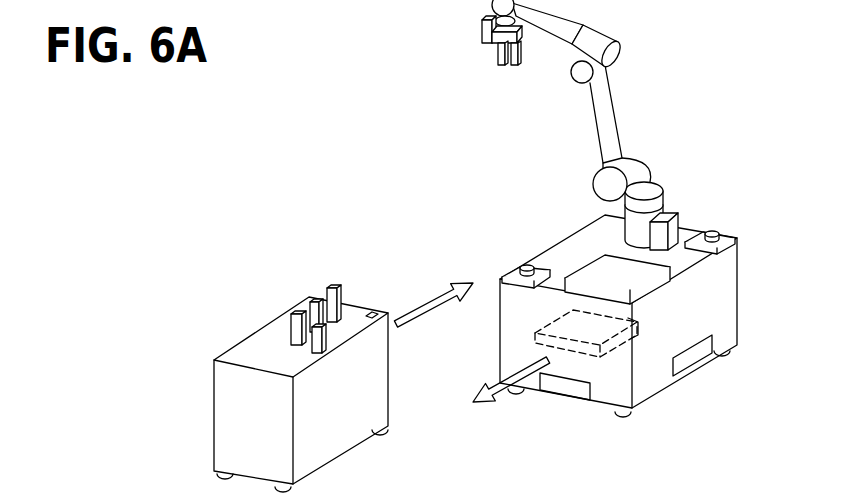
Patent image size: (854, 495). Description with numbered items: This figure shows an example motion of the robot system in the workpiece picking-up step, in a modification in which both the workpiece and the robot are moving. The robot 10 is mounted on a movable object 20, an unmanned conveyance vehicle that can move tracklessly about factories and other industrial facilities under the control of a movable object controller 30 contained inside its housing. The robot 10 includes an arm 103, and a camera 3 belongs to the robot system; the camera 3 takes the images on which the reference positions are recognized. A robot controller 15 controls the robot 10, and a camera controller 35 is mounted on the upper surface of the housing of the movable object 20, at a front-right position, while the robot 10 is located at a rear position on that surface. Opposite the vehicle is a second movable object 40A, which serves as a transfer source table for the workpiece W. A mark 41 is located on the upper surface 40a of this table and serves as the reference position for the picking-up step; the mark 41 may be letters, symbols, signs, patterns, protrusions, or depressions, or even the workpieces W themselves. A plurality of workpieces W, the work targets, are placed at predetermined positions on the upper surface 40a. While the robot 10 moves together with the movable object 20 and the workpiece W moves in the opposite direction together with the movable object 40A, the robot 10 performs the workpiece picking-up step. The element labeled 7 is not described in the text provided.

The camera 3 is at (482, 32).
The finger 7 is at (497, 58).
The robot 10 is at (572, 125).
The arm 103 is at (591, 116).
The robot controller 15 is at (677, 224).
The movable object 20 is at (616, 208).
The camera controller 35 is at (648, 293).
The movable object controller 30 is at (633, 346).
The movable object 40A is at (263, 357).
The upper surface 40a is at (253, 353).
The mark 41 is at (372, 312).
The workpiece W is at (297, 312).